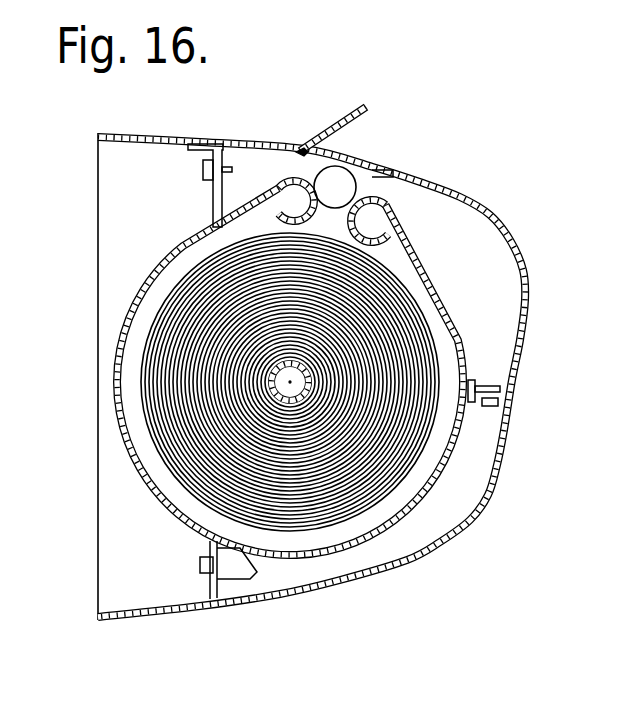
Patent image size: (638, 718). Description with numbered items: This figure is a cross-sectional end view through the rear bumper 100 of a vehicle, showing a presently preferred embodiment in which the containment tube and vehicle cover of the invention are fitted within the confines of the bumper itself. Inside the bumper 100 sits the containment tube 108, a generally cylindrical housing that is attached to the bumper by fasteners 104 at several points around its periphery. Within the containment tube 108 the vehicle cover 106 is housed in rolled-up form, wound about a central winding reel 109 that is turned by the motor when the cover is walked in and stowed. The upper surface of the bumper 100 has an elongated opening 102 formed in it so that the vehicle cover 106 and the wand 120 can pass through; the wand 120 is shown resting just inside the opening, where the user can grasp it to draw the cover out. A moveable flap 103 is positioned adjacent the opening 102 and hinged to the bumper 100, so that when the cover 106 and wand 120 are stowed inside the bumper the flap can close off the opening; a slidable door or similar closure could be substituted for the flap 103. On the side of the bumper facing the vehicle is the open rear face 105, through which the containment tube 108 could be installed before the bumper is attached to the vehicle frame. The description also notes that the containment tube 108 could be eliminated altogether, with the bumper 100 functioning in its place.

The rear bumper 100 is at (526, 236).
The elongated opening 102 is at (378, 168).
The moveable flap 103 is at (327, 140).
The fasteners 104 is at (200, 167).
The open rear face 105 is at (98, 219).
The vehicle cover 106 is at (187, 432).
The containment tube 108 is at (150, 268).
The winding reel 109 is at (272, 381).
The wand 120 is at (335, 185).